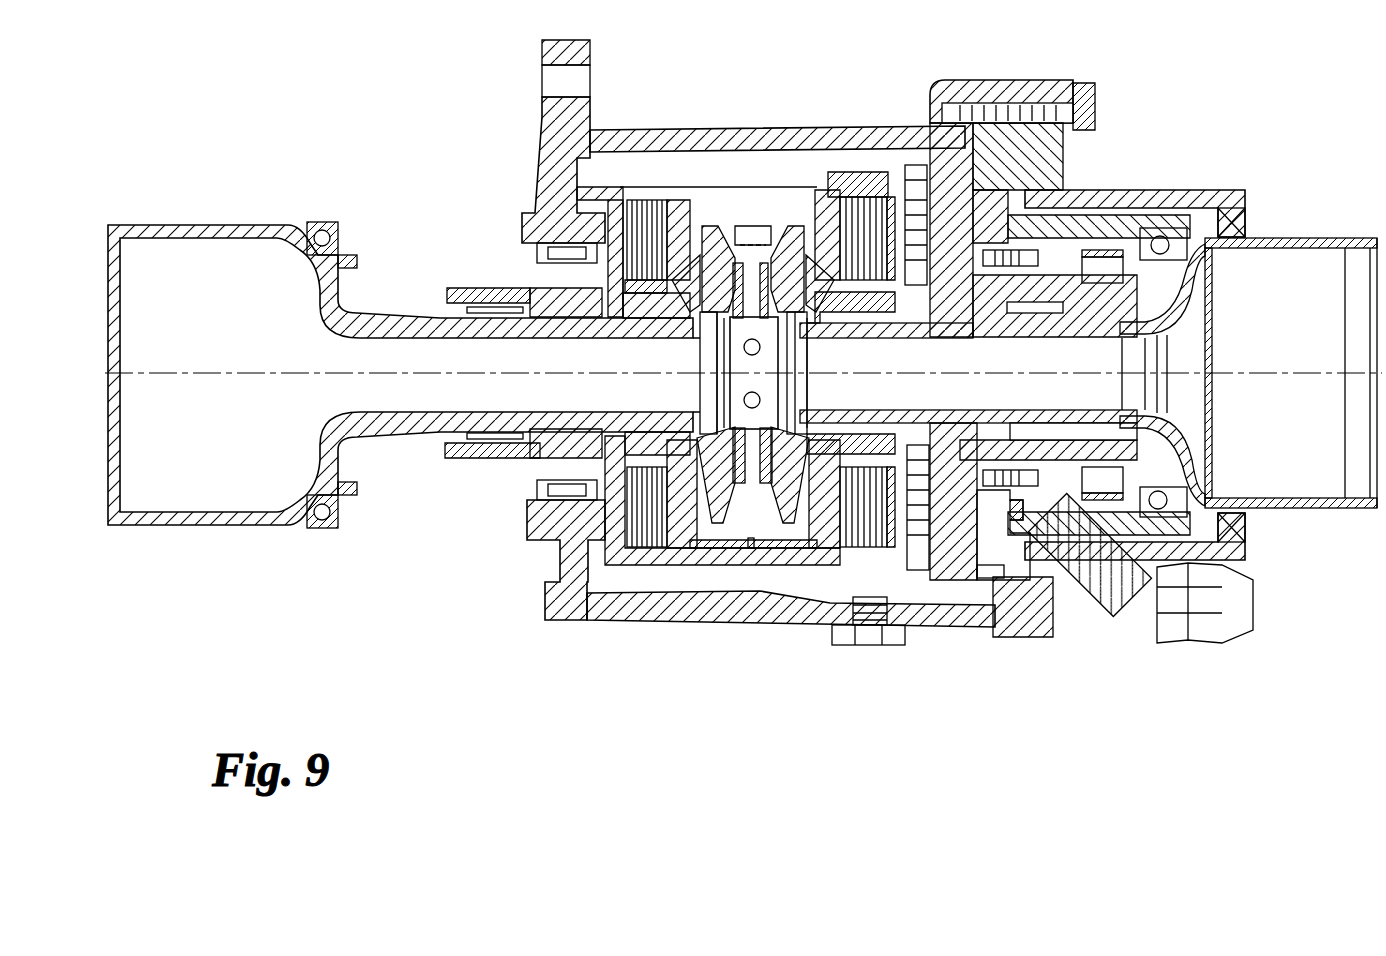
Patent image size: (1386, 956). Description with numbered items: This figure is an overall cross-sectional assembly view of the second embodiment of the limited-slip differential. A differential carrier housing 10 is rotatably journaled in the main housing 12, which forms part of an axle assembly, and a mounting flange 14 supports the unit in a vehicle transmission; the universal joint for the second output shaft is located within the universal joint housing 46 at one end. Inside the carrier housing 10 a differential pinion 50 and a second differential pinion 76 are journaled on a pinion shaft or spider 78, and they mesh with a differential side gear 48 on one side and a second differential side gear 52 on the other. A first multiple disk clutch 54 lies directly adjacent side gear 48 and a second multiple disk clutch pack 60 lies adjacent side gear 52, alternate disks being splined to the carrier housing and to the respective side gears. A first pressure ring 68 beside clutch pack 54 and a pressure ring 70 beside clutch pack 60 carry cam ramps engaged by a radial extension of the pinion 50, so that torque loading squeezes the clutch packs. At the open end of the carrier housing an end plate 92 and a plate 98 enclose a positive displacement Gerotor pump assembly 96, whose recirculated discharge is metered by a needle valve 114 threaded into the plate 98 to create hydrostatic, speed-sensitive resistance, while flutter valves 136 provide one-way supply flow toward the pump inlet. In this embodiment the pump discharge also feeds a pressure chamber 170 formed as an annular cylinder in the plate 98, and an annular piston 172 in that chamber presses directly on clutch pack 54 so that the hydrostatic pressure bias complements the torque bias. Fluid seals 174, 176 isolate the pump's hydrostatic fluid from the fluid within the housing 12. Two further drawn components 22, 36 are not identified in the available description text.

The mounting flange 14 is at (553, 50).
The differential carrier housing 10 is at (613, 197).
The second multiple disk clutch pack 60 is at (647, 203).
The differential pinion 50 is at (748, 237).
The main housing 12 is at (760, 130).
The first pressure ring 68 is at (817, 205).
The pressure chamber 170 is at (868, 197).
The Gerotor pump assembly 96 is at (953, 207).
The end plate 92 is at (1063, 186).
The fluid seal 174 is at (1090, 222).
The output cup 36 is at (1318, 240).
The universal joint housing 46 is at (245, 224).
The pressure ring 70 is at (623, 212).
The output shaft connector 22 is at (1123, 334).
The fluid seal 176 is at (1105, 450).
The second differential side gear 52 is at (680, 302).
The differential side gear 48 is at (822, 303).
The plate 98 is at (930, 440).
The needle valve 114 is at (927, 247).
The pinion shaft 78 is at (467, 452).
The second differential pinion 76 is at (700, 523).
The first multiple disk clutch 54 is at (753, 557).
The annular piston 172 is at (833, 550).
The flutter valves 136 is at (1080, 583).